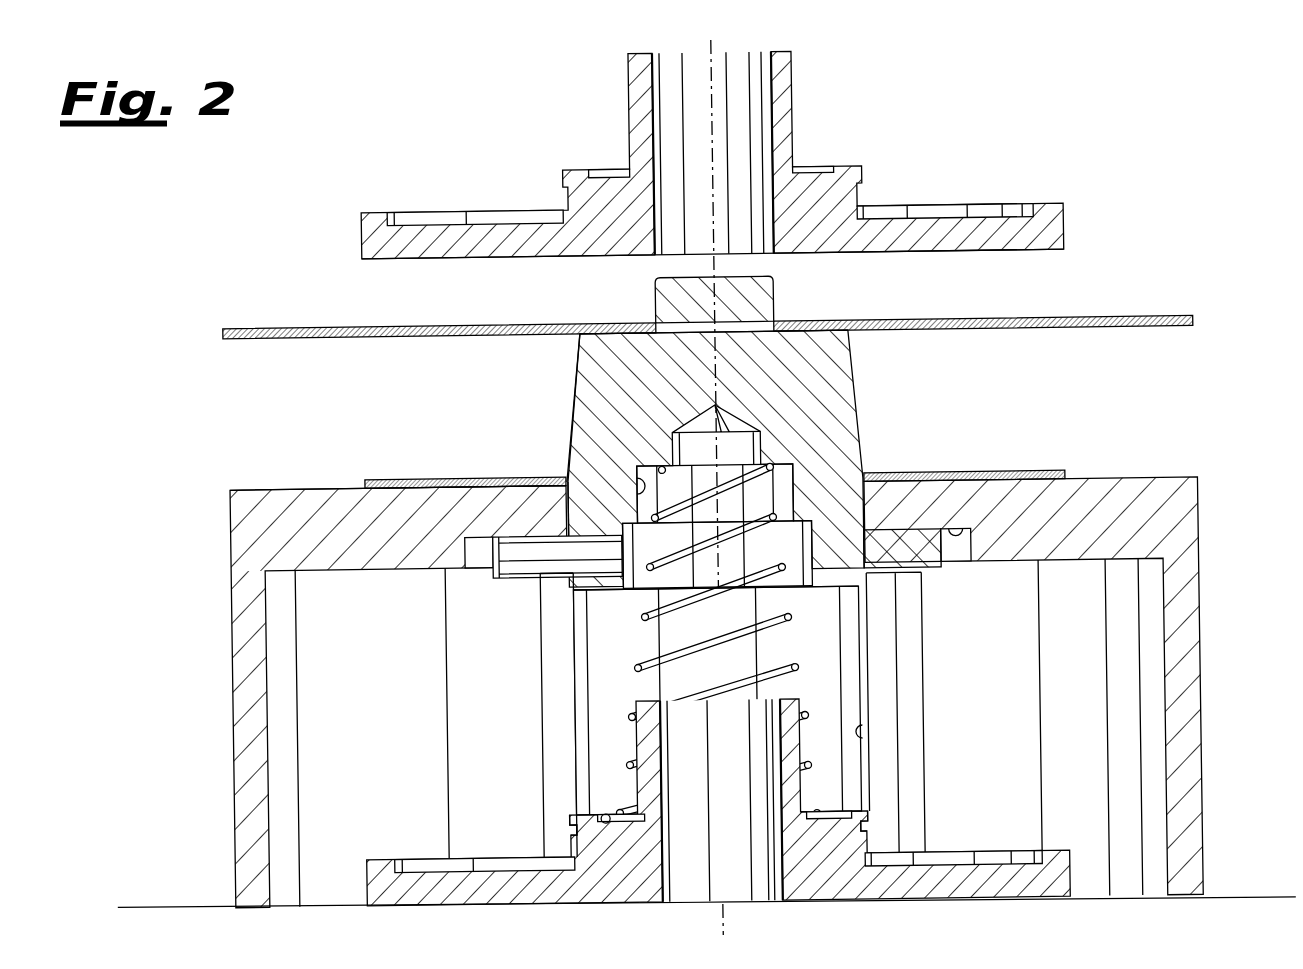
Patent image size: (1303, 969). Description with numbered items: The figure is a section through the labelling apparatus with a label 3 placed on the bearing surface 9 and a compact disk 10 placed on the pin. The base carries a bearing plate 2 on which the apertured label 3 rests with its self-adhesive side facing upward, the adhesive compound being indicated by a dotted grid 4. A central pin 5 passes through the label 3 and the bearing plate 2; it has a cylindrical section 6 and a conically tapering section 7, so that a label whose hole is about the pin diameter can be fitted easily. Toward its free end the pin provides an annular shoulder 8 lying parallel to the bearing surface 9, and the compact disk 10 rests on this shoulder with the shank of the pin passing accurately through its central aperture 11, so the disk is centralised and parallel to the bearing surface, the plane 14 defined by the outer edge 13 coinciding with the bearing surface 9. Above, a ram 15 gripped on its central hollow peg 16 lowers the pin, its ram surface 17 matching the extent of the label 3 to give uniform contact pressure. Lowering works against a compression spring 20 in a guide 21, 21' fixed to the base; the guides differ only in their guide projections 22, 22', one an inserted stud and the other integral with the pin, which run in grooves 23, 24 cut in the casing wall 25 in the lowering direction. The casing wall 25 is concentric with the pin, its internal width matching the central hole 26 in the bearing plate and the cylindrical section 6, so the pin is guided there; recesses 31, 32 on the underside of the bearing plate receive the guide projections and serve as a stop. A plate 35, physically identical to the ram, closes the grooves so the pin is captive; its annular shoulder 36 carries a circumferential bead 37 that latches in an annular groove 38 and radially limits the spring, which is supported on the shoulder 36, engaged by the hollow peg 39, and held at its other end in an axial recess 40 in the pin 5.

The bearing plate 2 is at (289, 534).
The label 3 is at (368, 479).
The dotted grid 4 is at (423, 479).
The central pin 5 is at (867, 415).
The cylindrical section 6 is at (566, 460).
The conically tapering section 7 is at (575, 376).
The annular shoulder 8 is at (817, 337).
The bearing surface 9 is at (1100, 483).
The compact disk 10 is at (1150, 328).
The central aperture 11 is at (775, 308).
The outer edge 13 is at (232, 481).
The plane 14 is at (323, 482).
The ram 15 is at (1072, 223).
The central hollow peg 16 is at (783, 113).
The ram surface 17 is at (381, 261).
The compression spring 20 is at (787, 674).
The guide 21 is at (660, 701).
The guide 21' is at (796, 620).
The guide projection 22 is at (540, 589).
The guide projection 22' is at (942, 568).
The groove 23 is at (551, 744).
The groove 24 is at (880, 772).
The casing wall 25 is at (857, 727).
The central hole 26 is at (840, 490).
The recess 31 is at (477, 547).
The recess 32 is at (1005, 482).
The plate 35 is at (884, 905).
The annular shoulder 36 is at (601, 823).
The circumferential bead 37 is at (859, 824).
The annular groove 38 is at (563, 820).
The hollow peg 39 is at (651, 737).
The axial recess 40 is at (630, 465).